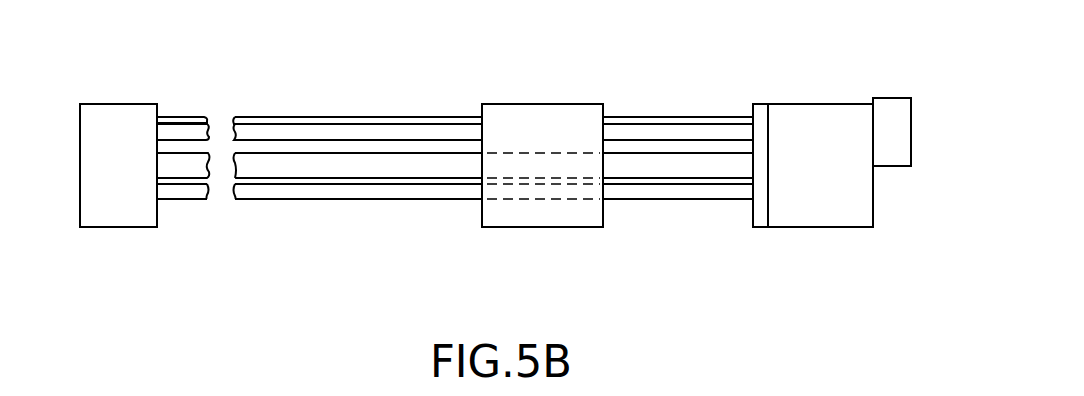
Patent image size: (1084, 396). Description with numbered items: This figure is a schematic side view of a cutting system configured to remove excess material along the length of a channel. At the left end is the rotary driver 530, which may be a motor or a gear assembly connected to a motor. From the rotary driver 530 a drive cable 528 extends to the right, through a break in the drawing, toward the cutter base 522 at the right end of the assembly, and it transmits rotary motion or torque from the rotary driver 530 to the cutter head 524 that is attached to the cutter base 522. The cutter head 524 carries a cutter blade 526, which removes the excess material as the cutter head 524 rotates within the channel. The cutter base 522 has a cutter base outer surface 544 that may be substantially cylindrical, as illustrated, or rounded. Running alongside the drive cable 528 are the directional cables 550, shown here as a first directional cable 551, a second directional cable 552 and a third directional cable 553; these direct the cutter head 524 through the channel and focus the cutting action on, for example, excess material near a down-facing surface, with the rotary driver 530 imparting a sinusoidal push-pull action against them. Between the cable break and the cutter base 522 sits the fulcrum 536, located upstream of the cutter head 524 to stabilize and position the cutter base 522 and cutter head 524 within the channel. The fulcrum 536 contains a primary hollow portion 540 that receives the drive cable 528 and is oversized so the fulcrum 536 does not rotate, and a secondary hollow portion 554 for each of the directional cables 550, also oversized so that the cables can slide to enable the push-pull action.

The rotary driver 530 is at (105, 105).
The fulcrum 536 is at (515, 118).
The primary hollow portion 540 is at (495, 168).
The secondary hollow portion 554 is at (545, 192).
The second directional cable 552 is at (642, 130).
The first directional cable 551 is at (670, 122).
The drive cable 528 is at (703, 167).
The directional cables 550 is at (629, 195).
The third directional cable 553 is at (667, 193).
The cutter base 522 is at (803, 118).
The cutter blade 526 is at (888, 102).
The cutter head 524 is at (893, 153).
The cutter base outer surface 544 is at (838, 227).